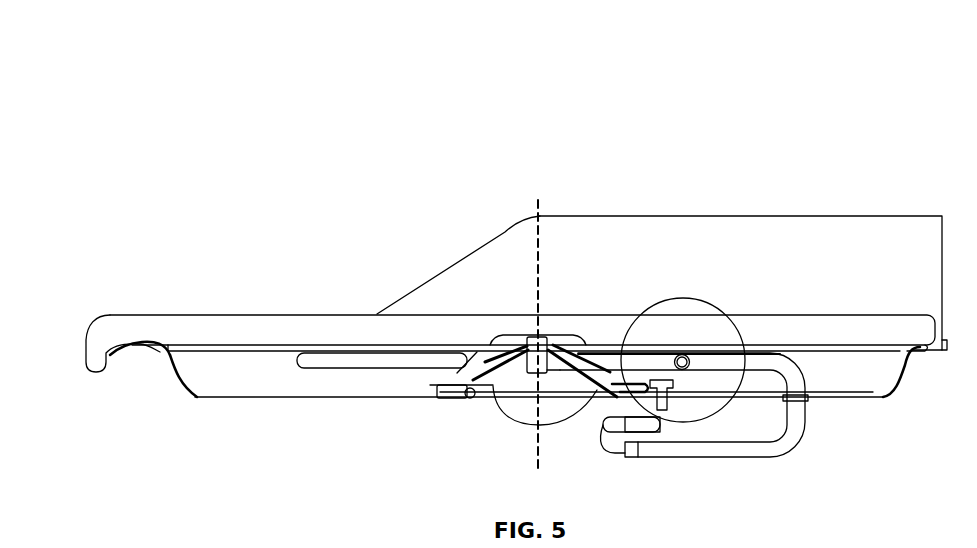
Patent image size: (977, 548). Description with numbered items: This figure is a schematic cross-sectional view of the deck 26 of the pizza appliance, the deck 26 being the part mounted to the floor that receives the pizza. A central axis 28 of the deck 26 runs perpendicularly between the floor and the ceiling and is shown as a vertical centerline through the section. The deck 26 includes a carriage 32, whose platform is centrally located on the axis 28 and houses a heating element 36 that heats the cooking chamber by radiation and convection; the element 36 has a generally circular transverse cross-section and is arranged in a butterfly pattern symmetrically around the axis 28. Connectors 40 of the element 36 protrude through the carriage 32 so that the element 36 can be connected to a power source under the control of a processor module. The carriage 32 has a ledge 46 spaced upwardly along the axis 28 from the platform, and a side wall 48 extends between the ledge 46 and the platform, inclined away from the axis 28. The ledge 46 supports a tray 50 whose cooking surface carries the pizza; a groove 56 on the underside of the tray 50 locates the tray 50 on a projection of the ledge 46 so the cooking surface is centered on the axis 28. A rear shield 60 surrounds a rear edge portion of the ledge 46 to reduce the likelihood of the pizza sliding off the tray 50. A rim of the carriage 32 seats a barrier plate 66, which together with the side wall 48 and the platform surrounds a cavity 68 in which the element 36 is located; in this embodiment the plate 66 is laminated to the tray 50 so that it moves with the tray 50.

The deck 26 is at (255, 197).
The central axis 28 is at (538, 207).
The carriage 32 is at (278, 393).
The heating element 36 is at (370, 362).
The connectors 40 is at (732, 446).
The ledge 46 is at (923, 350).
The side wall 48 is at (170, 365).
The tray 50 is at (320, 327).
The groove 56 is at (145, 333).
The rear shield 60 is at (790, 238).
The plate 66 is at (196, 400).
The cavity 68 is at (257, 386).